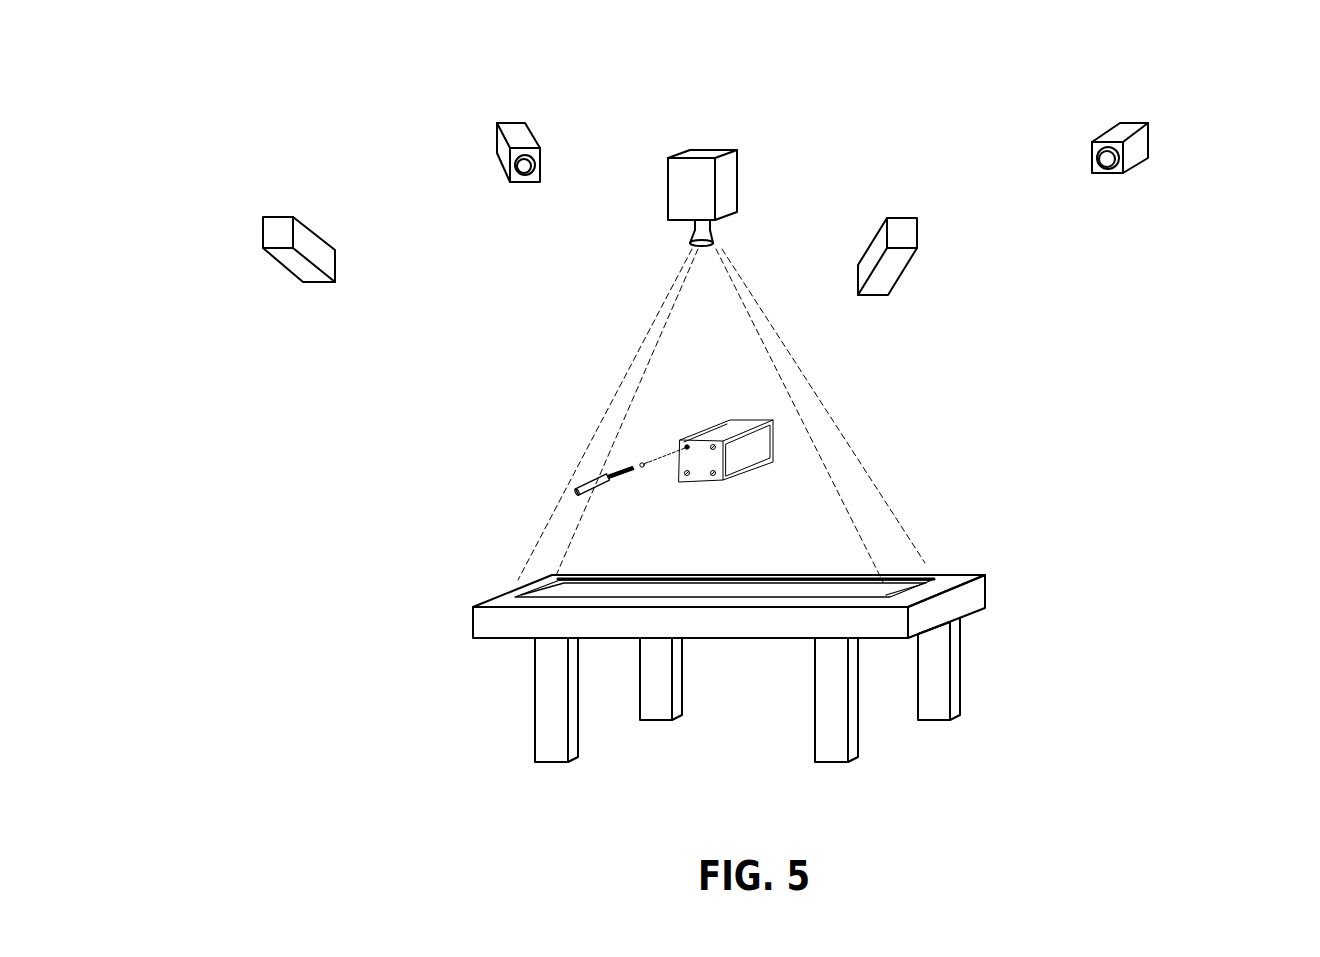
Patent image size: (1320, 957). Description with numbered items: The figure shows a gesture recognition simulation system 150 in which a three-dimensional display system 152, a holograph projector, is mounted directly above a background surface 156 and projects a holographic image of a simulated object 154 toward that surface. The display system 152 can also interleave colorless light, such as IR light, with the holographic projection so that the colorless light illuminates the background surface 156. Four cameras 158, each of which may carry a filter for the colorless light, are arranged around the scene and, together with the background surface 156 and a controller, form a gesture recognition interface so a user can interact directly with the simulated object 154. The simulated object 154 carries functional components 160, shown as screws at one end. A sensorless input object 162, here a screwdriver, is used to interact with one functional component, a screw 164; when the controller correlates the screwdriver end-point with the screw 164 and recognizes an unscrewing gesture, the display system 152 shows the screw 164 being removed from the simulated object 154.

The gesture recognition simulation system 150 is at (280, 78).
The three-dimensional display system 152 is at (720, 152).
The simulated object 154 is at (748, 420).
The background surface 156 is at (862, 583).
The cameras 158 is at (533, 137).
The functional components 160 is at (728, 498).
The sensorless input object 162 is at (590, 480).
The screw 164 is at (633, 441).